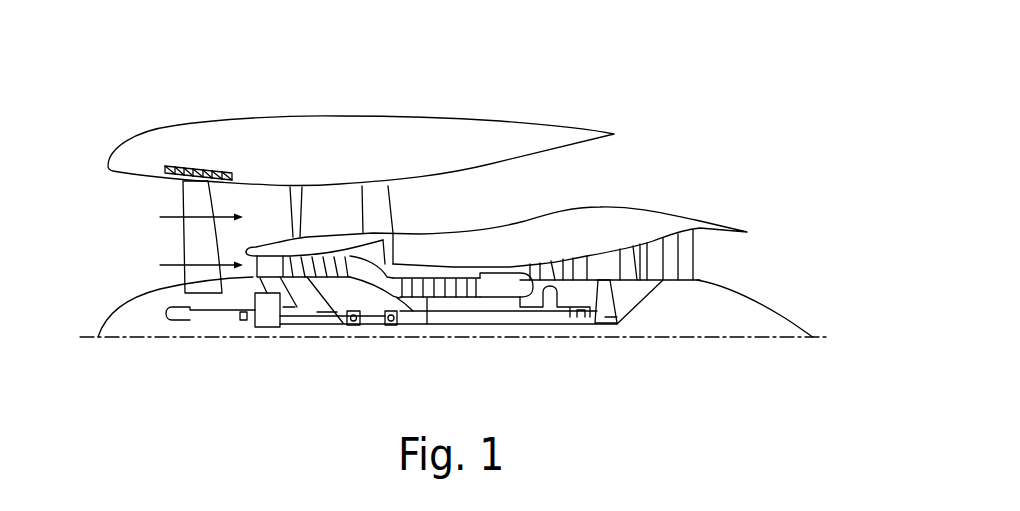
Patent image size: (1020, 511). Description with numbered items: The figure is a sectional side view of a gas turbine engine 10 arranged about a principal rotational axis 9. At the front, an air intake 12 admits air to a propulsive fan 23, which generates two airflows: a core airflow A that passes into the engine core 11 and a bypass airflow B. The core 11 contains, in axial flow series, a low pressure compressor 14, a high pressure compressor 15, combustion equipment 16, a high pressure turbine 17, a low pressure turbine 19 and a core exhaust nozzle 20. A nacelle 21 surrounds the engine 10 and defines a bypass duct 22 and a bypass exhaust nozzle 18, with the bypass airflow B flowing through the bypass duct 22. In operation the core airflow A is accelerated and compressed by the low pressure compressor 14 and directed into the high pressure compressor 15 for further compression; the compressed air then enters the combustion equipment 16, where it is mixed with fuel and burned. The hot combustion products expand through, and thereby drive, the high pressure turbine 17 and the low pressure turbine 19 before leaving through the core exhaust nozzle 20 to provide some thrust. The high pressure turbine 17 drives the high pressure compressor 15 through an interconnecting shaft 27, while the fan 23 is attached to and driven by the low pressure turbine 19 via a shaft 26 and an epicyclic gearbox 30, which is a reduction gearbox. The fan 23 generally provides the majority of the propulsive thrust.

The principal rotational axis 9 is at (718, 337).
The gas turbine engine 10 is at (439, 224).
The core 11 is at (519, 254).
The air intake 12 is at (116, 193).
The low pressure compressor 14 is at (327, 262).
The high pressure compressor 15 is at (447, 280).
The combustion equipment 16 is at (507, 287).
The high pressure turbine 17 is at (562, 263).
The bypass exhaust nozzle 18 is at (709, 131).
The low pressure turbine 19 is at (673, 268).
The core exhaust nozzle 20 is at (757, 263).
The nacelle 21 is at (375, 130).
The bypass duct 22 is at (595, 171).
The propulsive fan 23 is at (188, 252).
The shaft 26 is at (417, 327).
The interconnecting shaft 27 is at (470, 317).
The epicyclic gearbox 30 is at (268, 318).